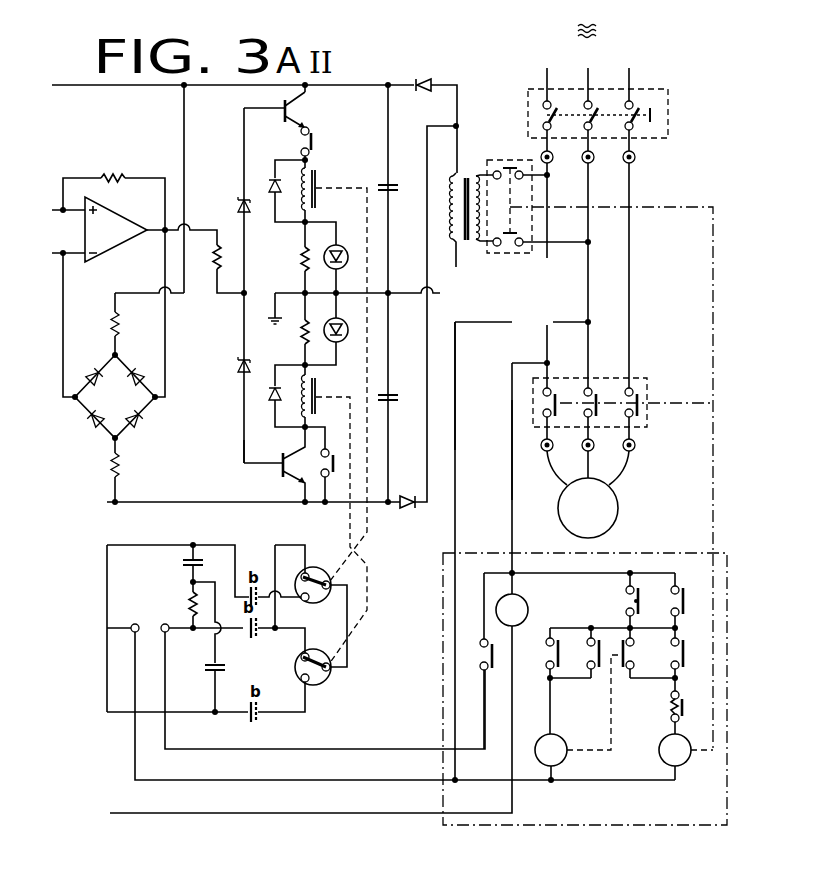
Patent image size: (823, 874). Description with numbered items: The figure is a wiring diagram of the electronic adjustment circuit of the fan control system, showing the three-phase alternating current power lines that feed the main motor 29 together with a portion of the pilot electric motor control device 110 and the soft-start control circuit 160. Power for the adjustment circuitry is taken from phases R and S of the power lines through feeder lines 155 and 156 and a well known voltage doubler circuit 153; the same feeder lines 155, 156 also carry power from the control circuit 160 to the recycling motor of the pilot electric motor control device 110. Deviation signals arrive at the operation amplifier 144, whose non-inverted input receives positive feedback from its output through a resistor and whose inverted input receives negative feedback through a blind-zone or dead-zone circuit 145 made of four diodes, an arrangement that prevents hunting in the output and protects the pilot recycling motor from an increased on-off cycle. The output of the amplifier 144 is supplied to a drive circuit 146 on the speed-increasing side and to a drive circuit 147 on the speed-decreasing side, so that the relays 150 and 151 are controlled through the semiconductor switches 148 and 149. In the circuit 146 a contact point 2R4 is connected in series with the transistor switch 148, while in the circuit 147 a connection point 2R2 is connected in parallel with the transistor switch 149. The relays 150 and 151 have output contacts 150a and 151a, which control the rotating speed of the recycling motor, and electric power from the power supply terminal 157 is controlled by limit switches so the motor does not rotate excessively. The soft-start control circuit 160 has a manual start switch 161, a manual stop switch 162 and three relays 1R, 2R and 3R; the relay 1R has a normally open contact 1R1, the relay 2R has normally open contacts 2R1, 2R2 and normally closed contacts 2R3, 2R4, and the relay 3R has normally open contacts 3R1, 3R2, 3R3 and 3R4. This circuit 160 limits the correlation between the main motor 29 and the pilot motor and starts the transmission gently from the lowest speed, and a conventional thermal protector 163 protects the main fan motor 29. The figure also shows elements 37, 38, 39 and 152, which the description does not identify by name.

The operation amplifier 144 is at (122, 225).
The blind-zone or dead-zone circuit 145 is at (126, 412).
The drive circuit on the side of increasing the speed 146 is at (241, 129).
The drive circuit on the side of decreasing the speed 147 is at (243, 436).
The transistor switch 148 is at (300, 125).
The transistor switch 149 is at (289, 484).
The relay 150 is at (308, 170).
The relay 151 is at (311, 378).
The transformer 152 is at (481, 160).
The voltage doubler circuit 153 is at (421, 136).
The feeder line 155 is at (546, 178).
The feeder line 156 is at (546, 244).
The power supply terminal 157 is at (158, 623).
The pilot electric motor control device 110 is at (141, 590).
The output contact 150a is at (314, 567).
The output contact 151a is at (315, 685).
The main motor 29 is at (617, 524).
The three-phase power source 37 is at (598, 33).
The main switch 38 is at (667, 90).
The contactor contacts 39 is at (656, 372).
The soft-start control circuit 160 is at (610, 820).
The manual start switch 161 is at (626, 612).
The manual stop switch 162 is at (549, 666).
The thermal protector 163 is at (670, 707).
The normally closed contact 2R4 is at (320, 143).
The normally open contact 2R2 is at (328, 464).
The normally open contact 3R3 is at (486, 250).
The normally open contact 3R2 is at (648, 414).
The normally open contact 3R4 is at (484, 667).
The normally open contact 3R1 is at (688, 603).
The normally open contact 1R1 is at (686, 653).
The normally open contact 2R1 is at (597, 673).
The normally closed contact 2R3 is at (613, 689).
The relay 1R is at (512, 610).
The relay 2R is at (551, 757).
The relay 3R is at (686, 757).